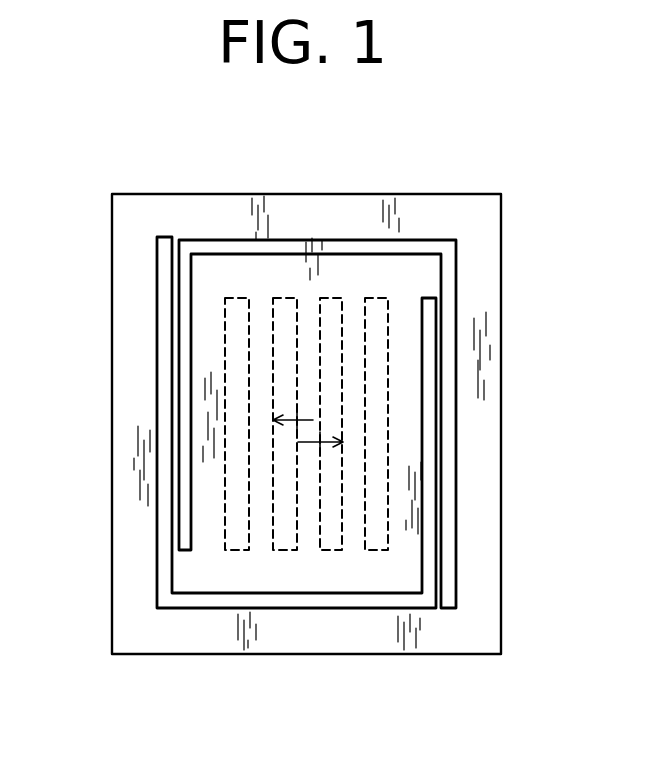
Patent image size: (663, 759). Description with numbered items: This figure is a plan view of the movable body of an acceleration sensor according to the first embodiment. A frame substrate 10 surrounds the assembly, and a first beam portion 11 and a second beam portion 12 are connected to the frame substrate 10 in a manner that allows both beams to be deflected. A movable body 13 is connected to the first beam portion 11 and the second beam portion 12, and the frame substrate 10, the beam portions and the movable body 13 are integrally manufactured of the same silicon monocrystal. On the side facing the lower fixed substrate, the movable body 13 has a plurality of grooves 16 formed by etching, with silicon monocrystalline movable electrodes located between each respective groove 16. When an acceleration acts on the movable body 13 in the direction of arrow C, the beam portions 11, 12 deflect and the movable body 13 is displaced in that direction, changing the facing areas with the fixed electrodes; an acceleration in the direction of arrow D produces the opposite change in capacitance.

The frame substrate 10 is at (247, 203).
The first beam portion 11 is at (173, 375).
The second beam portion 12 is at (440, 380).
The movable body 13 is at (349, 268).
The grooves 16 is at (268, 546).
The arrow C is at (302, 420).
The arrow D is at (310, 443).